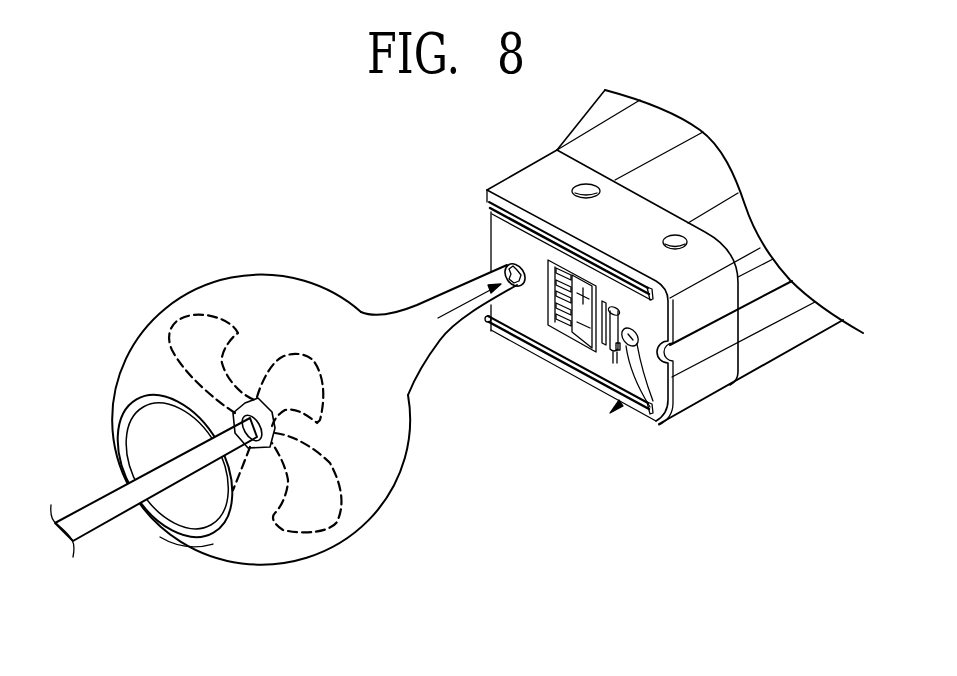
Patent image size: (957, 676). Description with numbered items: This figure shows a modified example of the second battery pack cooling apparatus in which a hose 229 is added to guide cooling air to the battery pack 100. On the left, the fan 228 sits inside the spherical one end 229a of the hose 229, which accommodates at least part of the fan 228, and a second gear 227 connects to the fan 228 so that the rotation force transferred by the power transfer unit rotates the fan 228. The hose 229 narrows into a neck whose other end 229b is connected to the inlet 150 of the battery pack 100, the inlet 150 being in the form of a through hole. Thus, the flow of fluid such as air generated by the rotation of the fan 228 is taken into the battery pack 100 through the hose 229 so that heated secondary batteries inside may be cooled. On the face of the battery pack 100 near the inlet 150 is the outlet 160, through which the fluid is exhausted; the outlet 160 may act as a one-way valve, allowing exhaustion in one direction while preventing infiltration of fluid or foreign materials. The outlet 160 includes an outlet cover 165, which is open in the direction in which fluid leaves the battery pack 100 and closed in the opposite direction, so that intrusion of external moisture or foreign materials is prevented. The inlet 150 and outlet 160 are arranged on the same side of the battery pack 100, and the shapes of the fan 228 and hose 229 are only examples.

The battery pack 100 is at (786, 370).
The inlet 150 is at (500, 252).
The outlet 160 is at (657, 421).
The outlet cover 165 is at (616, 355).
The second gear 227 is at (110, 522).
The fan 228 is at (312, 508).
The hose 229 is at (369, 419).
The one end of the hose 229a is at (395, 479).
The another end of the hose 229b is at (523, 287).